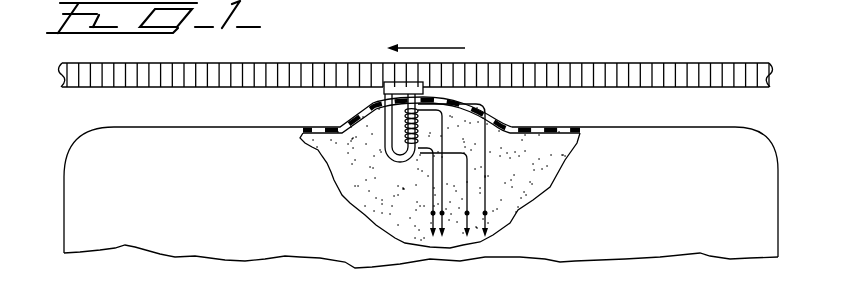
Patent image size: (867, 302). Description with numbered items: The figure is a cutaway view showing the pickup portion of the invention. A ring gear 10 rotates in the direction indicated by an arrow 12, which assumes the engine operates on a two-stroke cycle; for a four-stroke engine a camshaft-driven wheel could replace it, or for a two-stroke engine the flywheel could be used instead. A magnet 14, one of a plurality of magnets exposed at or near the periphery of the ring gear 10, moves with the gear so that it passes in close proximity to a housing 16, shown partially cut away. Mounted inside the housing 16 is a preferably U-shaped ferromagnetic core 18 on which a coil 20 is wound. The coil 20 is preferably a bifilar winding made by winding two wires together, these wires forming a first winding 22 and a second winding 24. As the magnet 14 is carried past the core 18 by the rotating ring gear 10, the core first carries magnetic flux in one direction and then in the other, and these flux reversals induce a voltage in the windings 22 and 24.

The ring gear 10 is at (283, 63).
The arrow 12 is at (437, 48).
The magnet 14 is at (384, 93).
The housing 16 is at (502, 126).
The U-shaped ferromagnetic core 18 is at (372, 150).
The coil 20 is at (424, 150).
The first winding 22 is at (429, 196).
The second winding 24 is at (465, 203).